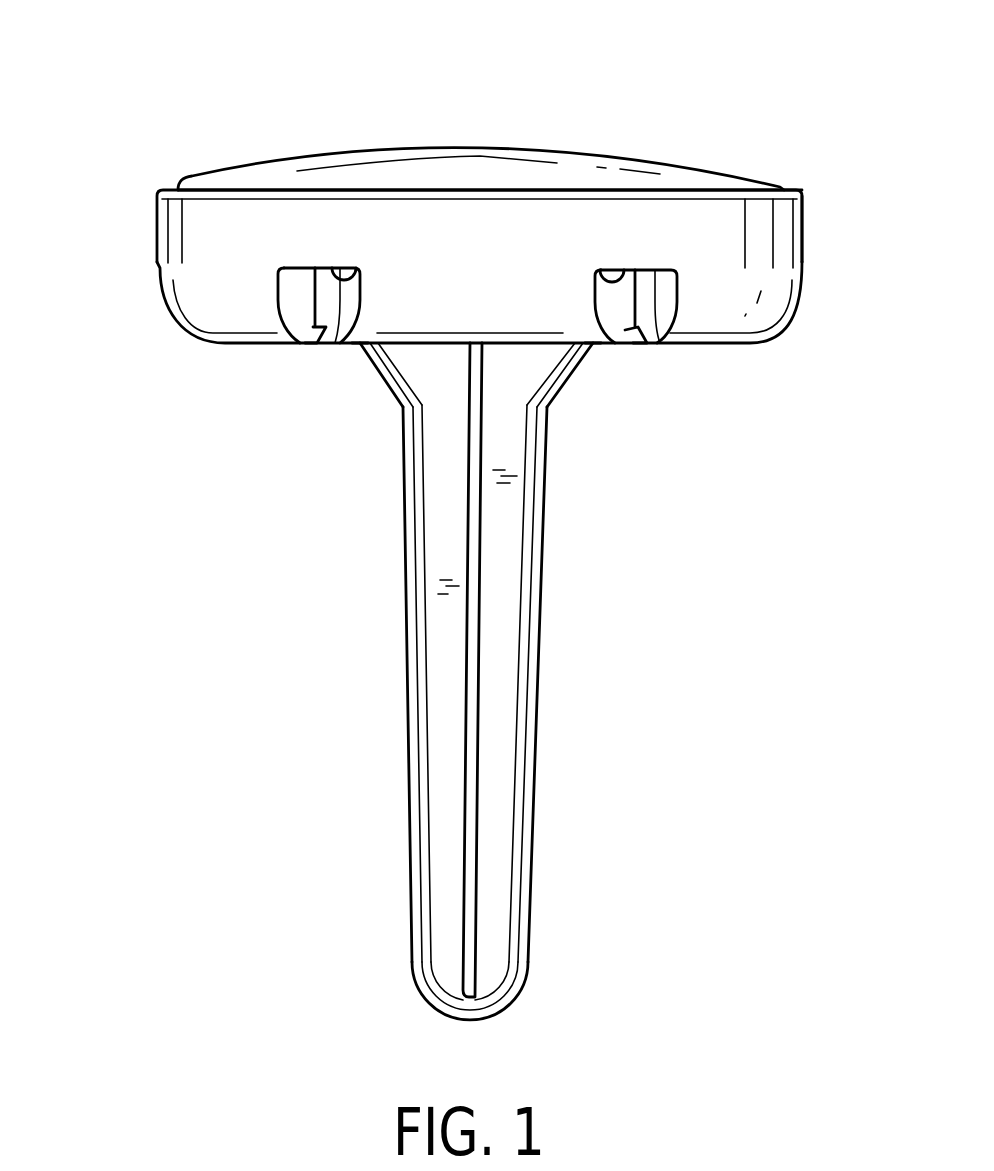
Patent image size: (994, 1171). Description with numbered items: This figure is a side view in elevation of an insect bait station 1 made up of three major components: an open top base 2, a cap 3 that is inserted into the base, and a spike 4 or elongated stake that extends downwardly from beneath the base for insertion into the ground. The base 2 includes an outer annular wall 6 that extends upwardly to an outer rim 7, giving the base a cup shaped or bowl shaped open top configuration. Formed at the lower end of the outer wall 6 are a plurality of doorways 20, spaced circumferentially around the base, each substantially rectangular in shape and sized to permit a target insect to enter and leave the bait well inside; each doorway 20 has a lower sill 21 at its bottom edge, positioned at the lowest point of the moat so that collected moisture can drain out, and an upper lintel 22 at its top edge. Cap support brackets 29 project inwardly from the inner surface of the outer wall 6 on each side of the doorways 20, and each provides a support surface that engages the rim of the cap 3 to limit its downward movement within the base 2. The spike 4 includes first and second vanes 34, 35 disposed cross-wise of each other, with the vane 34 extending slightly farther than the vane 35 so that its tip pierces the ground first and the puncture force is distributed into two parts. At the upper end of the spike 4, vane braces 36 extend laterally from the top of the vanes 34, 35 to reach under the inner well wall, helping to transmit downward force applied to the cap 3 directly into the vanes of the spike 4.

The insect bait station 1 is at (715, 93).
The base 2 is at (183, 330).
The cap 3 is at (469, 149).
The spike 4 is at (538, 672).
The outer annular wall 6 is at (783, 230).
The outer rim 7 is at (787, 189).
The doorway 20 is at (327, 368).
The lower sill 21 is at (351, 342).
The upper lintel 22 is at (357, 280).
The cap support bracket 29 is at (295, 283).
The first vane 34 is at (531, 783).
The second vane 35 is at (411, 778).
The vane brace 36 is at (378, 377).